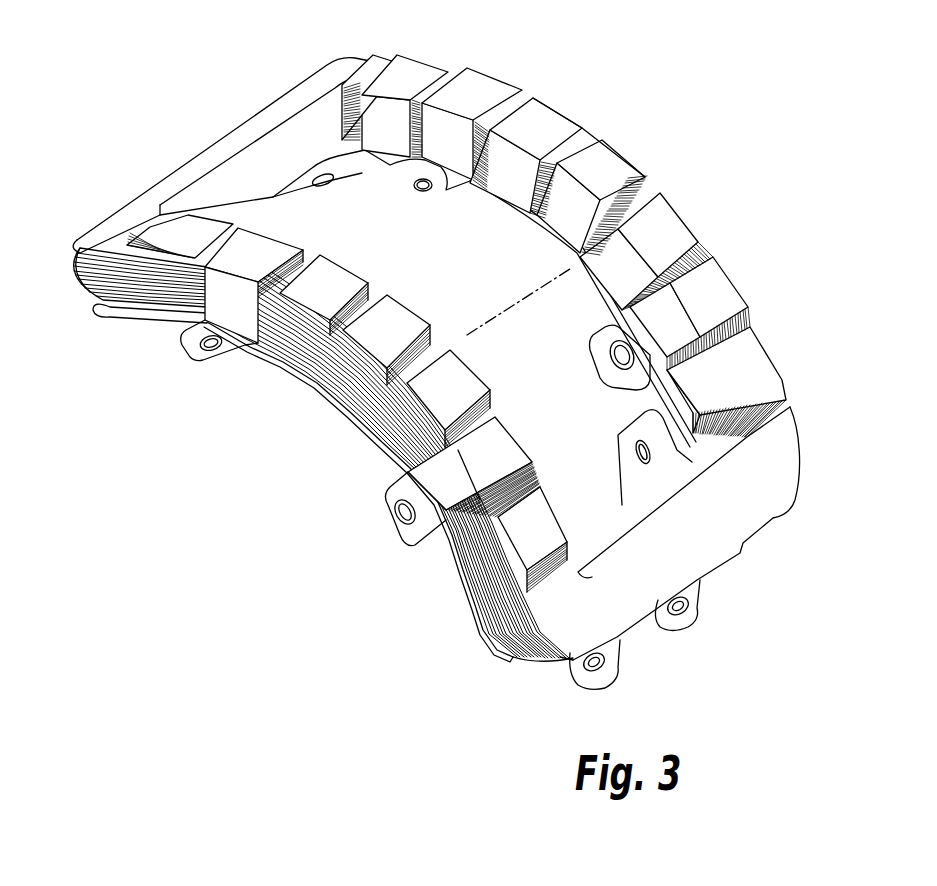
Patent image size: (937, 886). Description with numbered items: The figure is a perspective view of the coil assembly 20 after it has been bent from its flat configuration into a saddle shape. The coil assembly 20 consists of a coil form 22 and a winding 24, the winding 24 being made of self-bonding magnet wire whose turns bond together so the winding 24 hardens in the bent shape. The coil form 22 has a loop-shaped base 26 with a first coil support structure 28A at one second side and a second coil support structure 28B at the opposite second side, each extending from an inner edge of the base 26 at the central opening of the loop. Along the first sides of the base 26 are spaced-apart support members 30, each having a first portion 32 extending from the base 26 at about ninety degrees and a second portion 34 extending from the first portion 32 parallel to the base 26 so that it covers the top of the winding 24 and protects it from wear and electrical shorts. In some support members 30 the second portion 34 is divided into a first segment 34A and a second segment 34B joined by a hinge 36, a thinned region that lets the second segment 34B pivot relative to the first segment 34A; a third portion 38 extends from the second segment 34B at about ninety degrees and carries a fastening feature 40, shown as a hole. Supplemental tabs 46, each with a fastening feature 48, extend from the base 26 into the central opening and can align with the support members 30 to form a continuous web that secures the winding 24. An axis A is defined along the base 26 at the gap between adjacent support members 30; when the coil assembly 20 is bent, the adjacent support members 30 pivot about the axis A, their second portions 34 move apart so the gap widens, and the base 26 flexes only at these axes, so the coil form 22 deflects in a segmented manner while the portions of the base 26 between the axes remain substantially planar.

The coil assembly 20 is at (662, 656).
The coil form 22 is at (777, 473).
The winding 24 is at (97, 287).
The base 26 is at (127, 312).
The first coil support structure 28A is at (688, 576).
The second coil support structure 28B is at (290, 174).
The support member 30 is at (600, 148).
The first portion 32 is at (526, 192).
The second portion 34 is at (553, 144).
The first substantially planar segment 34A is at (280, 268).
The second substantially planar segment 34B is at (250, 316).
The hinge 36 is at (643, 178).
The third portion 38 is at (237, 347).
The fastening feature 40 is at (207, 350).
The supplemental tab 46 is at (470, 185).
The fastening feature 48 is at (423, 190).
The axis A is at (512, 308).